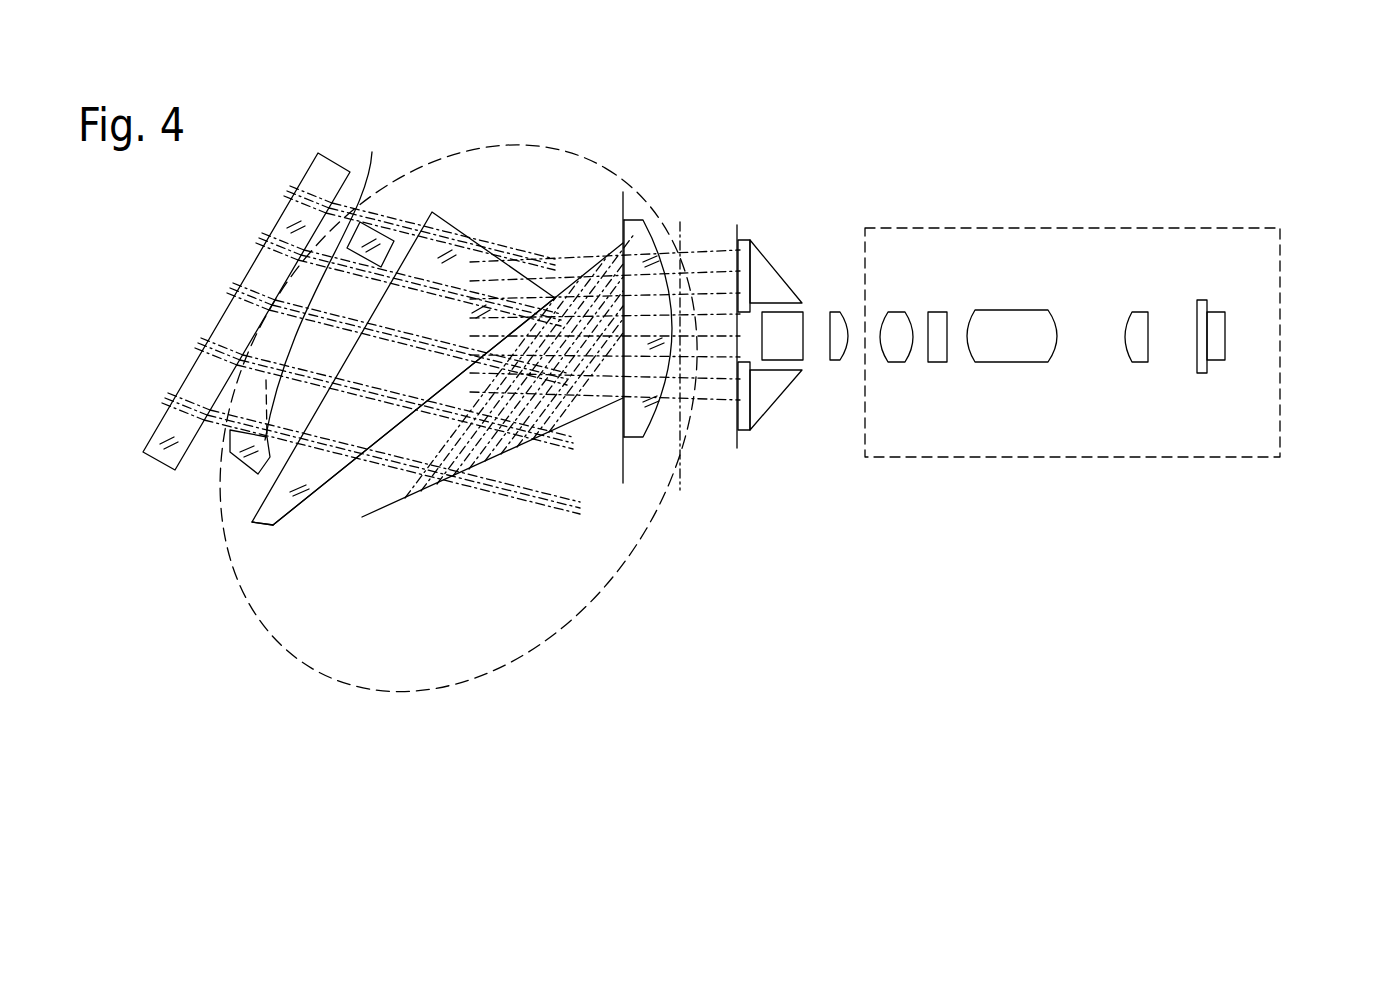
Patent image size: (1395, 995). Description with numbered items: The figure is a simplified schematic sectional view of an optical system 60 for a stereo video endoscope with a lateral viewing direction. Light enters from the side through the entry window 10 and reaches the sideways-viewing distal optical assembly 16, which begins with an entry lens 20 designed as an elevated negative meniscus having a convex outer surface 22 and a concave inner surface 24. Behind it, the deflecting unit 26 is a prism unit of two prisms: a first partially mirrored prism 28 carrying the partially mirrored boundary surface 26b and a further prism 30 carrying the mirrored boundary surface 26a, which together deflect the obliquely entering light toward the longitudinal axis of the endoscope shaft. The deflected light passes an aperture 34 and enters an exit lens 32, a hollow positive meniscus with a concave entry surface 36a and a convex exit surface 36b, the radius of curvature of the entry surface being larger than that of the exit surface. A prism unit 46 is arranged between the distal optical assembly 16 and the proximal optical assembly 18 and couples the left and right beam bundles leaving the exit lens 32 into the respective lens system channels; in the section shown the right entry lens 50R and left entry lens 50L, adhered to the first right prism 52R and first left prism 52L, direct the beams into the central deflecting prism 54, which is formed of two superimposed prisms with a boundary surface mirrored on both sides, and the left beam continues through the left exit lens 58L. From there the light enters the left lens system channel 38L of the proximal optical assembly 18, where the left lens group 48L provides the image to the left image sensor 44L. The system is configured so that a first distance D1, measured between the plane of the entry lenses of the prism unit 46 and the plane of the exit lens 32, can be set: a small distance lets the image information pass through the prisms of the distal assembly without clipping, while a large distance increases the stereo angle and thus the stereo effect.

The entry window 10 is at (163, 457).
The distal optical assembly 16 is at (527, 650).
The proximal optical assembly 18 is at (1213, 228).
The entry lens 20 is at (378, 306).
The convex outer surface 22 is at (226, 447).
The concave inner surface 24 is at (329, 279).
The deflecting unit 26 is at (413, 421).
The mirrored boundary surface 26a is at (472, 468).
The partially mirrored boundary surface 26b is at (315, 493).
The first partially mirrored prism 28 is at (273, 510).
The partially mirrored prism 30 is at (522, 462).
The exit lens 32 is at (630, 336).
The aperture 34 is at (623, 193).
The concave entry surface 36a is at (620, 345).
The convex exit surface 36b is at (655, 230).
The first distance D1 is at (730, 328).
The prism unit 46 is at (777, 212).
The right entry lens 50R is at (738, 240).
The left entry lens 50L is at (742, 430).
The first right prism 52R is at (780, 278).
The first left prism 52L is at (782, 395).
The central deflecting prism 54 is at (795, 345).
The left exit lens 58L is at (837, 315).
The optical system 60 is at (1118, 310).
The left lens group 48L is at (980, 405).
The left image sensor 44L is at (1215, 345).
The left lens system channel 38L is at (1284, 339).